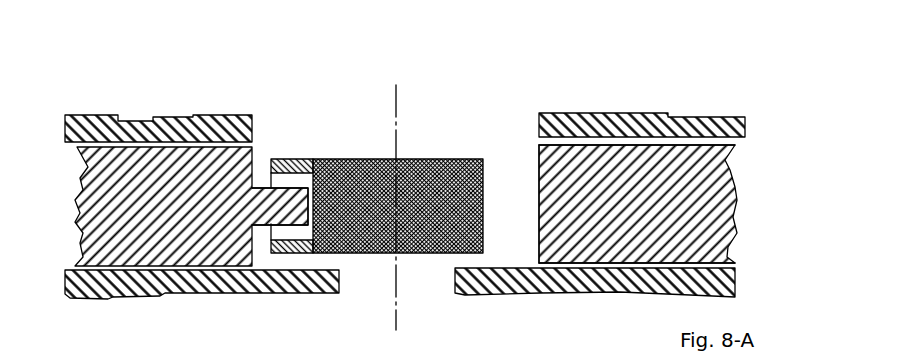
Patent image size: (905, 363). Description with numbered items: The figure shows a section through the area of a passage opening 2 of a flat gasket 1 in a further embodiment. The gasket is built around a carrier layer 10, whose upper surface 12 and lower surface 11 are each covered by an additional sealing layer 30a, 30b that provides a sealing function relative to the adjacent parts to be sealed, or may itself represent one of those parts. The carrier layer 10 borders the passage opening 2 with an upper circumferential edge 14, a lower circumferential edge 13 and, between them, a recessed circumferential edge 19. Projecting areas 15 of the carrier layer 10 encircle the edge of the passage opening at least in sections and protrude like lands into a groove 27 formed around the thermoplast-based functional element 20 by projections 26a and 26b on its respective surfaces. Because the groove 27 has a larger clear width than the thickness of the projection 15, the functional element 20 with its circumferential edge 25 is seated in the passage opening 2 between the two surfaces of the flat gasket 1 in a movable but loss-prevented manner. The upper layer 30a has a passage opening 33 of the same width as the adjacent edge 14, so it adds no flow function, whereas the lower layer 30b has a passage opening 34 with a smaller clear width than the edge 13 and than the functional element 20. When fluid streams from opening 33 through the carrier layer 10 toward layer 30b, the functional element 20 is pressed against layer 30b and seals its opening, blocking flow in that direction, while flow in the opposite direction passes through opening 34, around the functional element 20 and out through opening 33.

The flat gasket 1 is at (678, 88).
The passage opening 2 is at (515, 120).
The carrier layer 10 is at (734, 199).
The lower surface of the carrier layer 11 is at (170, 264).
The upper surface of the carrier layer 12 is at (150, 149).
The lower circumferential edge 13 is at (539, 253).
The upper circumferential edge 14 is at (539, 148).
The projecting areas 15 is at (263, 187).
The recessed circumferential edge 19 is at (539, 200).
The functional element 20 is at (413, 168).
The circumferential edge of the functional element 25 is at (309, 210).
The upper projection of the functional element 26a is at (282, 160).
The lower projection of the functional element 26b is at (291, 254).
The groove 27 is at (272, 227).
The upper sealing layer 30a is at (743, 118).
The lower sealing layer 30b is at (724, 280).
The passage opening of layer 30a 33 is at (492, 130).
The passage opening of layer 30b 34 is at (433, 285).